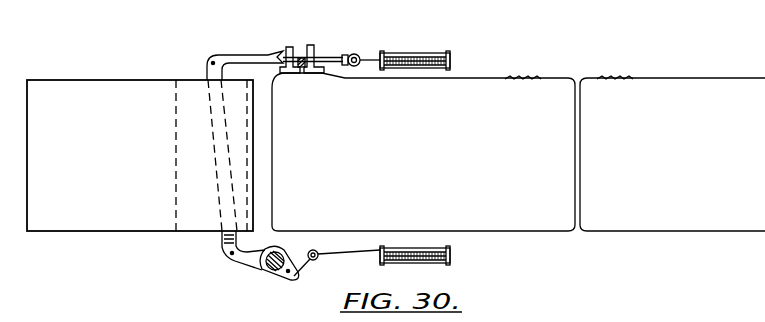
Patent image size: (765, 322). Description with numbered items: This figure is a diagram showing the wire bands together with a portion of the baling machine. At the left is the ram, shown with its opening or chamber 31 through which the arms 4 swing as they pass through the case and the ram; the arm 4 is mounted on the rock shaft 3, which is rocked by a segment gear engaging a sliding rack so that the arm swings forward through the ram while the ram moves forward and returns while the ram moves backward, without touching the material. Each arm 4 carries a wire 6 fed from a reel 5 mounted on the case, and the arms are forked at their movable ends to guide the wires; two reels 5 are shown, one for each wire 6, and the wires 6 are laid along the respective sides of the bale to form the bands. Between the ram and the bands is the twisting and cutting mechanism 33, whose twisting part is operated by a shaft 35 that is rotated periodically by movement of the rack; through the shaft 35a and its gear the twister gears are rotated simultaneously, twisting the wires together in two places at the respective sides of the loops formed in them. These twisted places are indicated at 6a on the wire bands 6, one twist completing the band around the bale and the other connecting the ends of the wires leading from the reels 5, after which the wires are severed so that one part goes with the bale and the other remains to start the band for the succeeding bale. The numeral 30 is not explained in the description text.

The housing/box 30 is at (140, 155).
The opening in the ram 31 is at (188, 225).
The arm 4 is at (233, 57).
The rock shaft 3 is at (272, 274).
The wire 6 is at (281, 55).
The twisted place in the wires 6a is at (612, 81).
The twisting and cutting mechanism 33 is at (300, 54).
The shaft 35a is at (328, 57).
The shaft 35 is at (356, 55).
The reel 5 is at (413, 54).